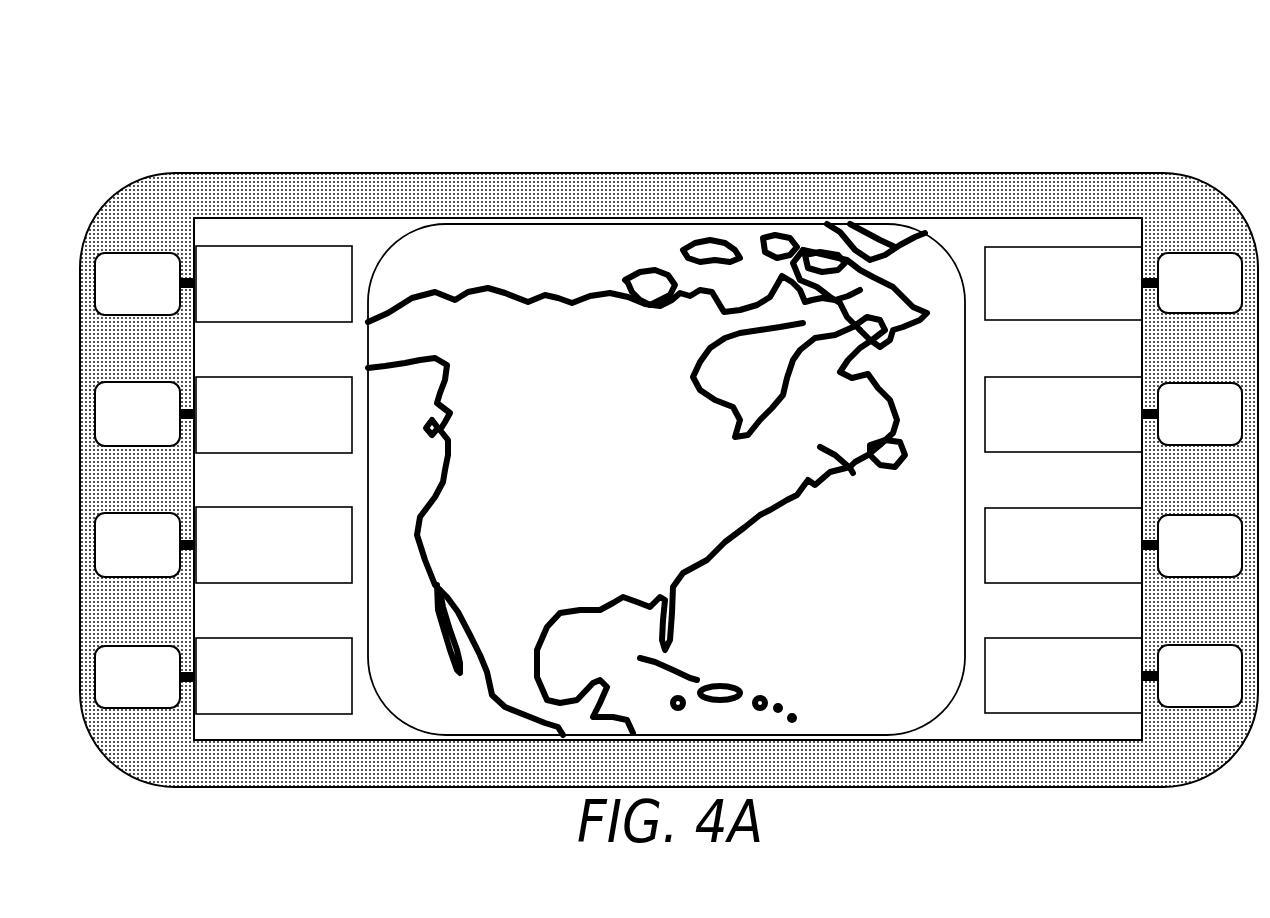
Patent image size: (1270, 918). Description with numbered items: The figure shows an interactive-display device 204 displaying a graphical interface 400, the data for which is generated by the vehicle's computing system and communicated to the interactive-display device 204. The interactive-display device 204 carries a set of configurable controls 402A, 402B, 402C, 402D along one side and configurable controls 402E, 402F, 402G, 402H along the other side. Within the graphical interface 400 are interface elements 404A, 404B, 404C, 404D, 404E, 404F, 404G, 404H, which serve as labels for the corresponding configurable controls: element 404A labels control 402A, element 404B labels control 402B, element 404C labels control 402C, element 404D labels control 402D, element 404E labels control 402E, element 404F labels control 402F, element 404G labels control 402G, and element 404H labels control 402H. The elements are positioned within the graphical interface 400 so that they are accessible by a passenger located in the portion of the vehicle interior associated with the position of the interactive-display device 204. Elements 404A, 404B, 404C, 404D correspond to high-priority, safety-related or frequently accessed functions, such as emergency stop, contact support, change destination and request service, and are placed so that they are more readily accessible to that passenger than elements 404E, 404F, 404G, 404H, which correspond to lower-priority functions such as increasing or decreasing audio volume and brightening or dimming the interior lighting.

The interactive-display device 204 is at (416, 62).
The graphical interface 400 is at (1140, 173).
The configurable control 402A is at (164, 297).
The configurable control 402B is at (164, 428).
The configurable control 402C is at (164, 559).
The configurable control 402D is at (164, 690).
The configurable control 402E is at (1174, 297).
The configurable control 402F is at (1174, 428).
The configurable control 402G is at (1174, 559).
The configurable control 402H is at (1174, 690).
The interface element 404A is at (302, 245).
The interface element 404B is at (302, 377).
The interface element 404C is at (302, 507).
The interface element 404D is at (302, 637).
The interface element 404E is at (1090, 247).
The interface element 404F is at (1090, 377).
The interface element 404G is at (1090, 508).
The interface element 404H is at (1090, 638).